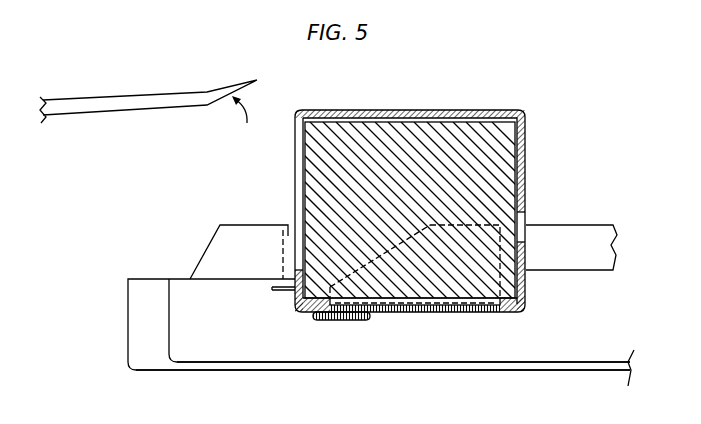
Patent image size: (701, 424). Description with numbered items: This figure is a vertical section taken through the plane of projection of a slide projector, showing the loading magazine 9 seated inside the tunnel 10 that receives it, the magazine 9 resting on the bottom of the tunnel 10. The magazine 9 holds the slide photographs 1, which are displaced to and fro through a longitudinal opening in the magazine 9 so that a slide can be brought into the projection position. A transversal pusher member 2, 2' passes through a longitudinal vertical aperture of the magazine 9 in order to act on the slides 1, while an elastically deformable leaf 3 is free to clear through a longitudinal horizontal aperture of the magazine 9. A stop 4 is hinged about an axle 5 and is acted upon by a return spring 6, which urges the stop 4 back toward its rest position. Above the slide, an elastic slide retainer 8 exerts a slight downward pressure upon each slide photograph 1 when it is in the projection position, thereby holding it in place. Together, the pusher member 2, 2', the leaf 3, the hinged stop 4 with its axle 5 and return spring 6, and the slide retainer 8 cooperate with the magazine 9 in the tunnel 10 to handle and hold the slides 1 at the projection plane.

The slide photographs 1 is at (474, 128).
The transversal pusher member 2 is at (571, 231).
The transversal pusher member 2' is at (239, 238).
The elastically deformable leaf 3 is at (457, 278).
The stop 4 is at (273, 290).
The axle 5 is at (323, 318).
The return spring 6 is at (348, 320).
The slide retainer 8 is at (142, 97).
The loading magazine 9 is at (377, 111).
The tunnel 10 is at (499, 312).